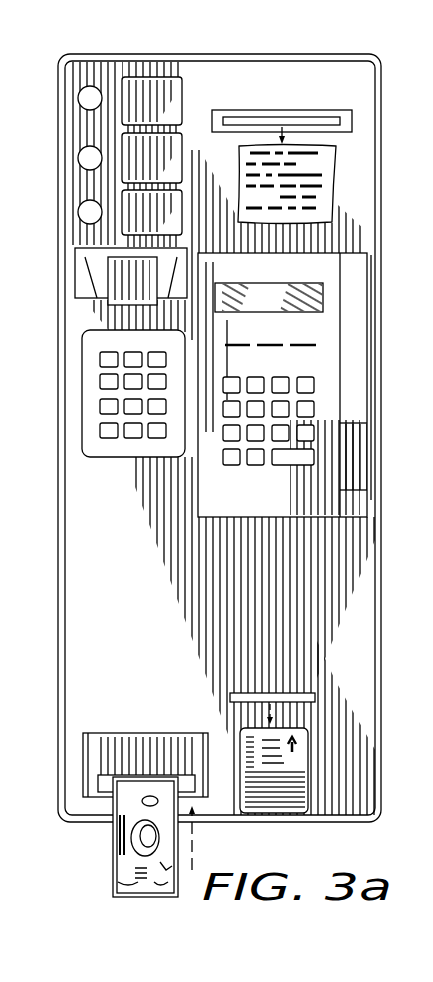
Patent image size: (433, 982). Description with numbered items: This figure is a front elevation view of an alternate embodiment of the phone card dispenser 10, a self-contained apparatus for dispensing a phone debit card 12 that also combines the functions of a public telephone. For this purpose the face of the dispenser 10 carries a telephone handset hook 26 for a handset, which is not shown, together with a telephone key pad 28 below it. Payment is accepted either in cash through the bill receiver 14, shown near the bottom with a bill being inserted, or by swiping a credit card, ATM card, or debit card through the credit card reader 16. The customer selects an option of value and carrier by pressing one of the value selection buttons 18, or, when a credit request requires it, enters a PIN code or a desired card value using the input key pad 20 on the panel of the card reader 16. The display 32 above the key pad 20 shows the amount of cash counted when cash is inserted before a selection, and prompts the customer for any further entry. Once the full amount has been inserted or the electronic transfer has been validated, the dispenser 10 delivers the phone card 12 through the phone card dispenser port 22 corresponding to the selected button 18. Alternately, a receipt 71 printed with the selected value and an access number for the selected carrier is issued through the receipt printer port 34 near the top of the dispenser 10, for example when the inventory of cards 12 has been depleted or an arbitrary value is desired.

The phone card dispenser 10 is at (390, 55).
The phone debit card 12 is at (305, 762).
The bill receiver 14 is at (188, 778).
The credit card reader 16 is at (340, 328).
The value selection buttons 18 is at (176, 157).
The input key pad 20 is at (263, 442).
The phone card dispenser port 22 is at (291, 694).
The telephone handset hook 26 is at (100, 272).
The telephone key pad 28 is at (100, 362).
The display 32 is at (324, 297).
The receipt printer port 34 is at (296, 118).
The receipt 71 is at (326, 177).